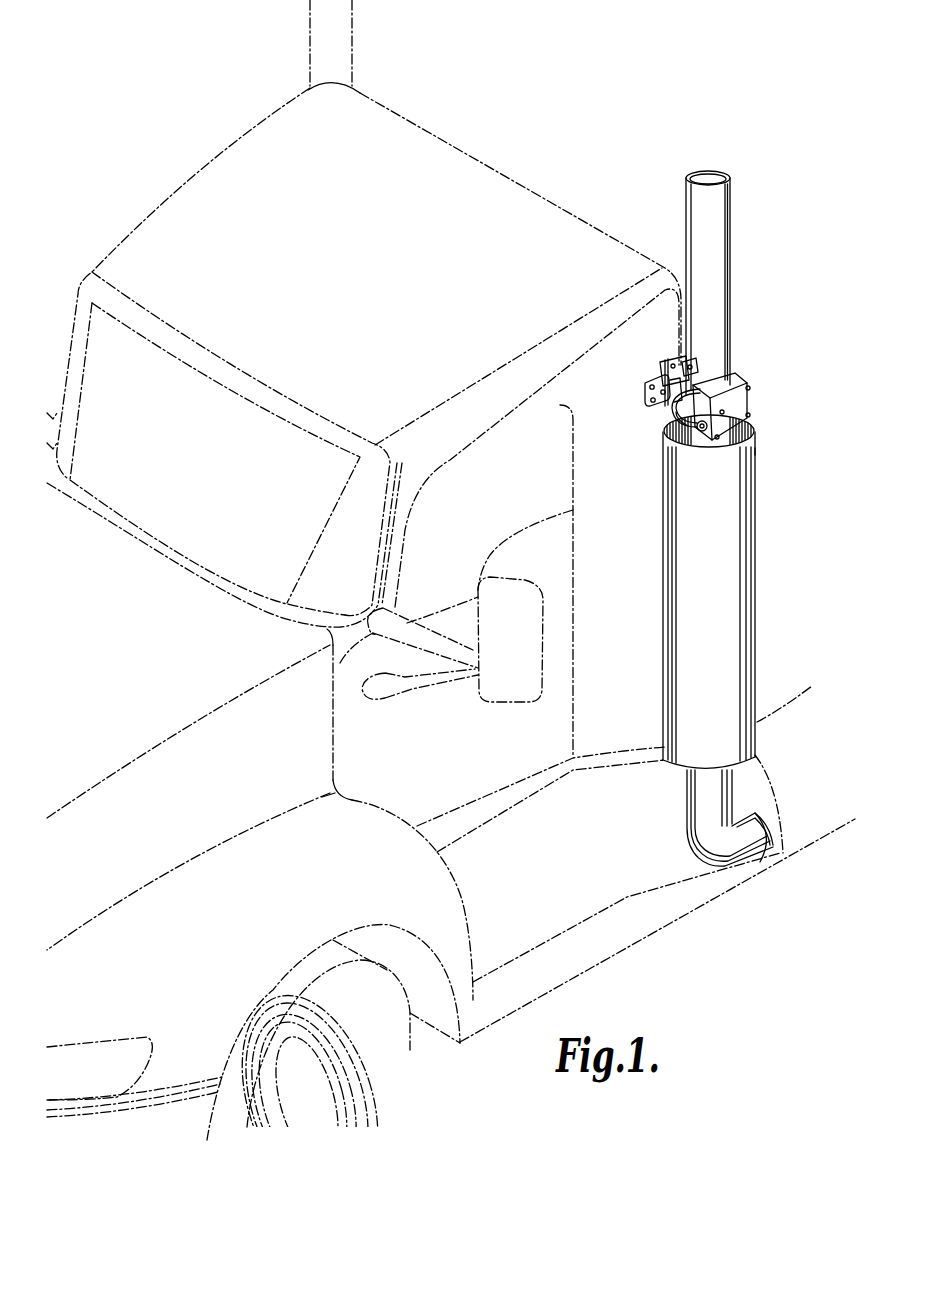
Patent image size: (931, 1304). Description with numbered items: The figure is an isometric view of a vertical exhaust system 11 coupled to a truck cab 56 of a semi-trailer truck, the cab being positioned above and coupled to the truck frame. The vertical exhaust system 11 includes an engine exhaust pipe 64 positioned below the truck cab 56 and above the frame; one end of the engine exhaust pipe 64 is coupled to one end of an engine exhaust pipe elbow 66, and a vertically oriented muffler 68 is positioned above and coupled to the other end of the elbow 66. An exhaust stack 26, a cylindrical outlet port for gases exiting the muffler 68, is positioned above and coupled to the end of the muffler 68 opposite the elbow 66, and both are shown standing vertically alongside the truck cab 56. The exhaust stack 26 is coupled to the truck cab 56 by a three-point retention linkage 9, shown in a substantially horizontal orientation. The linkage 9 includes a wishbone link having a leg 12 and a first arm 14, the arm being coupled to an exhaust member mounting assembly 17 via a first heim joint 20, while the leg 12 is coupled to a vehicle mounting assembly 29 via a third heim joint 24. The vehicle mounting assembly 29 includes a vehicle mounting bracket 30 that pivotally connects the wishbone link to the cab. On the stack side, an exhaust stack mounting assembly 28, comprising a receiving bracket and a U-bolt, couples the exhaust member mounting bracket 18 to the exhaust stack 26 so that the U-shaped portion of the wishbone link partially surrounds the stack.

The three-point retention linkage 9 is at (647, 413).
The vertical exhaust system 11 is at (777, 443).
The leg 12 is at (683, 378).
The first arm 14 is at (668, 410).
The exhaust member mounting assembly 17 is at (766, 409).
The exhaust member mounting bracket 18 is at (745, 403).
The first heim joint 20 is at (697, 433).
The third heim joint 24 is at (657, 371).
The exhaust stack 26 is at (727, 238).
The exhaust stack mounting assembly 28 is at (697, 400).
The vehicle mounting assembly 29 is at (637, 394).
The vehicle mounting bracket 30 is at (673, 370).
The truck cab 56 is at (512, 195).
The engine exhaust pipe 64 is at (763, 833).
The engine exhaust pipe elbow 66 is at (717, 850).
The muffler 68 is at (747, 582).